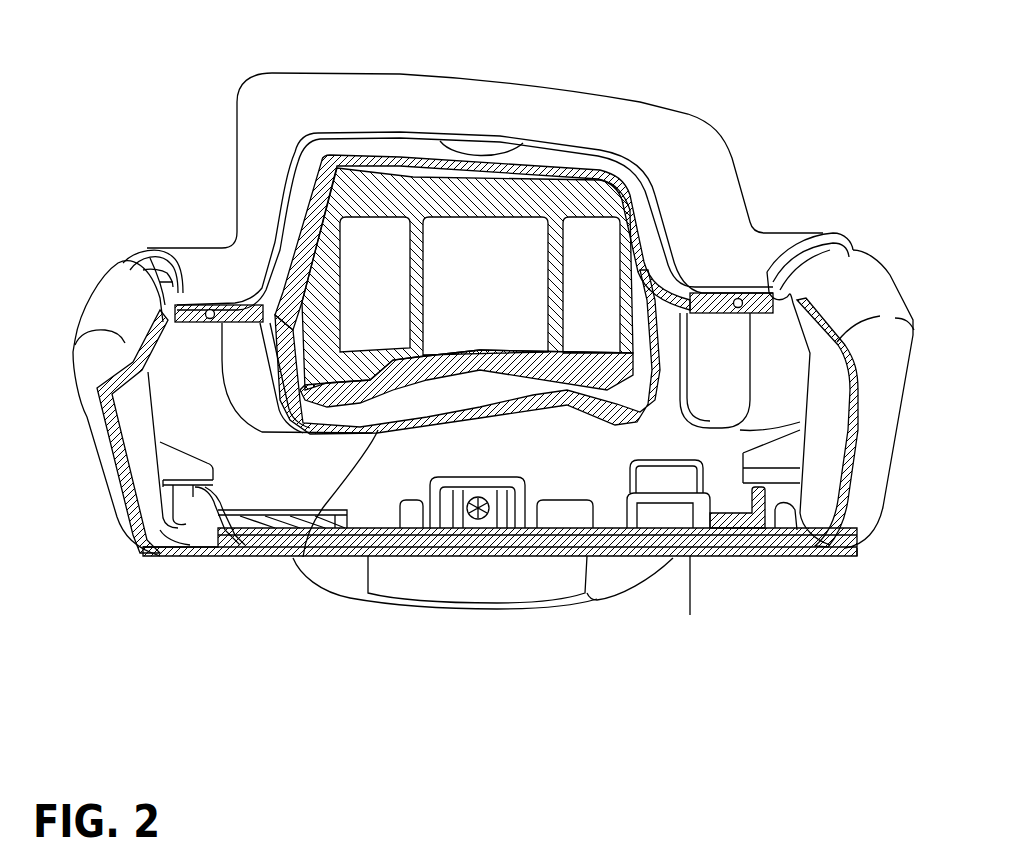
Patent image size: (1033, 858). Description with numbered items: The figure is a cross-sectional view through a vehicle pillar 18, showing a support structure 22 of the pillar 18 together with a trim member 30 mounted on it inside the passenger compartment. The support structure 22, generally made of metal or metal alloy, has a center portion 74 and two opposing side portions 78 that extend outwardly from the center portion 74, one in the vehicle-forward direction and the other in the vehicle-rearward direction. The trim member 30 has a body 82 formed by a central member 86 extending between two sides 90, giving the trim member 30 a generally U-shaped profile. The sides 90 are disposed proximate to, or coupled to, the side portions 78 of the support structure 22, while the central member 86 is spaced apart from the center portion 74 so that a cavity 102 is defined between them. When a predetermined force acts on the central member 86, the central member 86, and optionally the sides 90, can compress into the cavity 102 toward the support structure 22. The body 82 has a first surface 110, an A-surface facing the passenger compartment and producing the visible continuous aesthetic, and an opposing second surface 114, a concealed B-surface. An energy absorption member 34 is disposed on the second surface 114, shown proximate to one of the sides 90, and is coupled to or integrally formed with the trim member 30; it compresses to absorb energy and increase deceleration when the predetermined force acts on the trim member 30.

The pillar 18 is at (763, 116).
The support structure 22 is at (553, 113).
The trim member 30 is at (800, 553).
The energy absorption member 34 is at (710, 480).
The center portion 74 is at (297, 557).
The side portions 78 is at (195, 270).
The body 82 is at (423, 557).
The central member 86 is at (540, 557).
The sides 90 is at (117, 453).
The cavity 102 is at (235, 472).
The first surface 110 is at (240, 557).
The second surface 114 is at (688, 557).